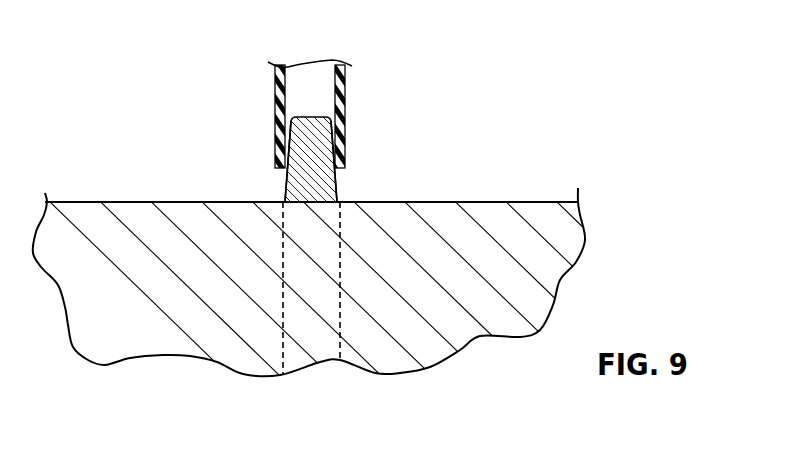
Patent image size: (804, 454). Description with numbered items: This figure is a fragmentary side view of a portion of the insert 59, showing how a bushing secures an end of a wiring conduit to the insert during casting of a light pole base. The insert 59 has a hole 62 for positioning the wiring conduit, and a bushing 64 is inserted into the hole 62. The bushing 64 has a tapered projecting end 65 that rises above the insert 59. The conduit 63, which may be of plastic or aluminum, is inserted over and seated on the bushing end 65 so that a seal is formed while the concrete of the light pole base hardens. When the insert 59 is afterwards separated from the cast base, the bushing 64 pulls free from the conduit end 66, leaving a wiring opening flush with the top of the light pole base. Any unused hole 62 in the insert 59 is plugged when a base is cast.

The insert 59 is at (509, 162).
The hole 62 is at (287, 198).
The conduit 63 is at (345, 82).
The bushing 64 is at (340, 261).
The tapered projecting end 65 is at (338, 184).
The conduit end 66 is at (345, 131).